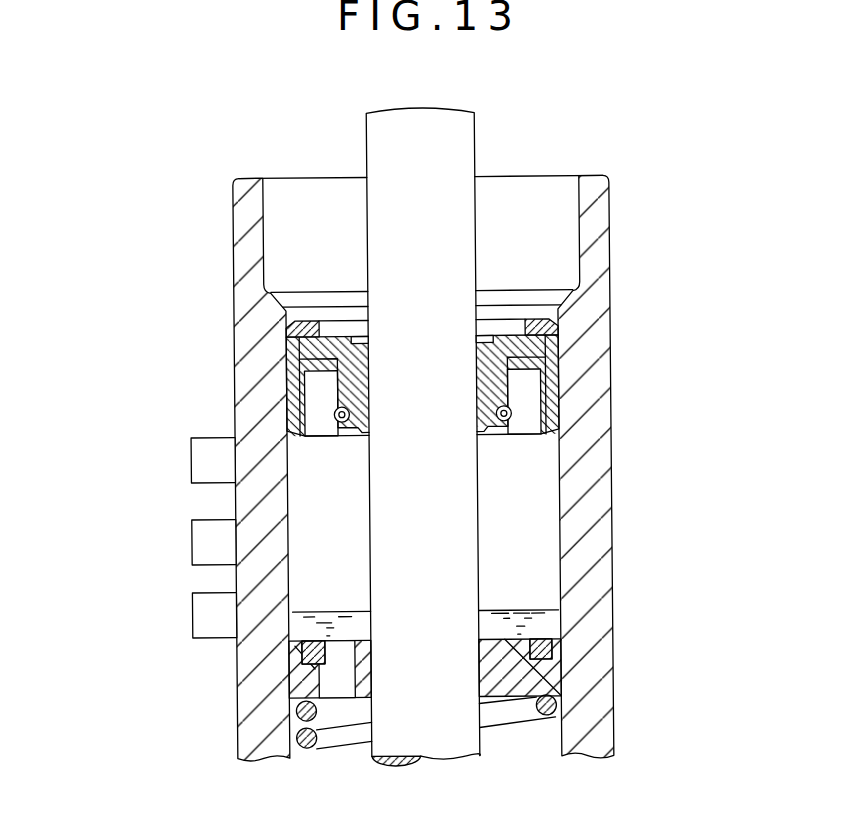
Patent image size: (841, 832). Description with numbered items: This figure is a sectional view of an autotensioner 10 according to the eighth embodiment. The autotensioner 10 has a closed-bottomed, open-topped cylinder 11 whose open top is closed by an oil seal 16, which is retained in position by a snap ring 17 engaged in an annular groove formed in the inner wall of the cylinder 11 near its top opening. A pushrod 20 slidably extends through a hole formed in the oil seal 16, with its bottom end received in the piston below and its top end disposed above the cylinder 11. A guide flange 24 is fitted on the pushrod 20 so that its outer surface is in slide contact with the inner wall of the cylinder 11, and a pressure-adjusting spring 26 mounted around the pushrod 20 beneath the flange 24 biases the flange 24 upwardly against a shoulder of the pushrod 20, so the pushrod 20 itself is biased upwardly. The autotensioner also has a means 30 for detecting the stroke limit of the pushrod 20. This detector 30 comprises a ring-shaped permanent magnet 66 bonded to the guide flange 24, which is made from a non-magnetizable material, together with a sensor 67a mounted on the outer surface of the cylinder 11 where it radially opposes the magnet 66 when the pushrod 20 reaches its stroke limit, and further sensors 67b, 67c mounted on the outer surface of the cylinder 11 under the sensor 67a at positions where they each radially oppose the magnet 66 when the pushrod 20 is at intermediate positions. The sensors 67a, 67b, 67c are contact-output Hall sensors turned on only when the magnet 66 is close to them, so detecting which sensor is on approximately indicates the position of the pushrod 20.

The autotensioner 10 is at (224, 167).
The cylinder 11 is at (240, 212).
The oil seal 16 is at (548, 347).
The snap ring 17 is at (551, 320).
The pushrod 20 is at (453, 560).
The guide flange 24 is at (303, 683).
The pressure-adjusting spring 26 is at (332, 735).
The means for detecting the stroke limit 30 is at (143, 567).
The ring-shaped permanent magnet 66 is at (300, 648).
The sensor 67a is at (200, 463).
The sensor 67b is at (202, 540).
The sensor 67c is at (203, 612).